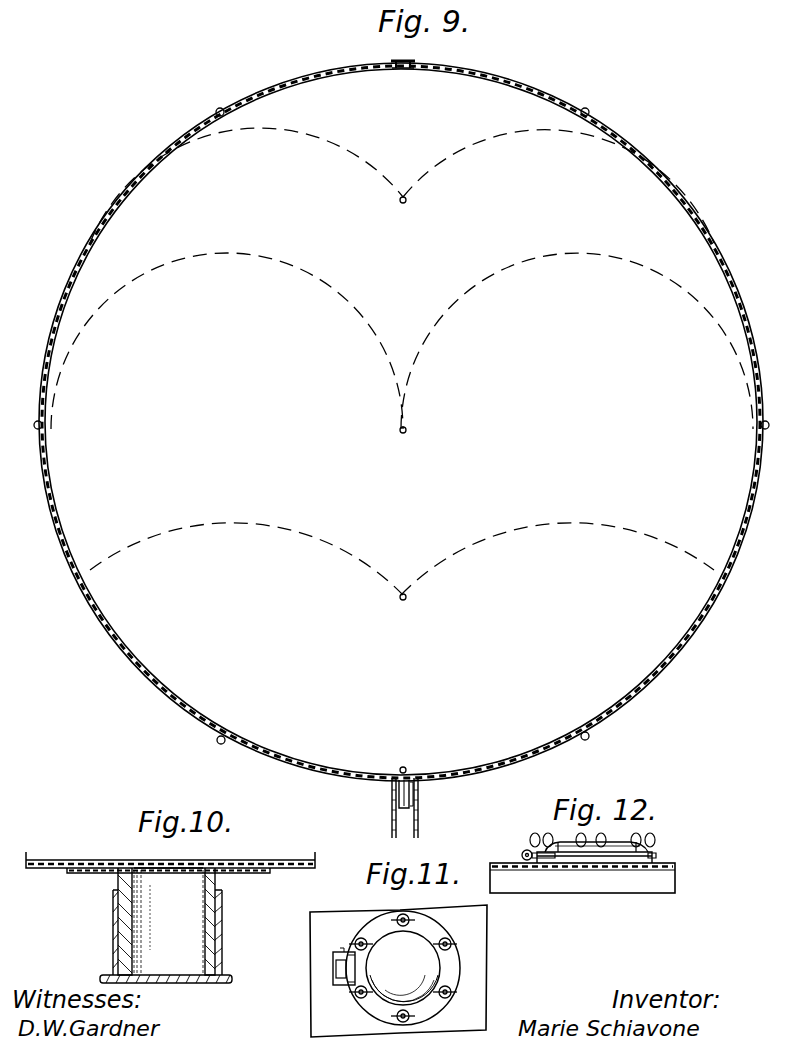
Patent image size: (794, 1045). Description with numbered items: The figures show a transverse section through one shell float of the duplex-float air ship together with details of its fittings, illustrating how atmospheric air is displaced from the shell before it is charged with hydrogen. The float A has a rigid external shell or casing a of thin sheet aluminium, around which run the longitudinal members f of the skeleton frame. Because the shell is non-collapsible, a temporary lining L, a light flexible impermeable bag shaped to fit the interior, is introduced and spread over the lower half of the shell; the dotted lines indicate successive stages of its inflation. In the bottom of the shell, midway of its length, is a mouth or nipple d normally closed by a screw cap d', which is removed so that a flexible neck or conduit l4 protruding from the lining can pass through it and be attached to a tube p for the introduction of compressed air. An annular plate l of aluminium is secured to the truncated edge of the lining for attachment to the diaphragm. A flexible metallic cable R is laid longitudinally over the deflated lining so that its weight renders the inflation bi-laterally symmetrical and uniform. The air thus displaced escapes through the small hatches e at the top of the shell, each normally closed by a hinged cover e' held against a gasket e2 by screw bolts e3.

In FIG. 9, the aerostat or float A is at (401, 422).
In FIG. 9, the temporary lining L is at (66, 481).
In FIG. 9, the longitudinal members f is at (223, 108).
In FIG. 9, the flexible metallic cable R is at (407, 200).
In FIG. 9, the hatch e is at (403, 85).
In FIG. 11, the hatch e is at (398, 971).
In FIG. 12, the hatch e is at (594, 864).
In FIG. 9, the hinged cover e' is at (414, 52).
In FIG. 11, the hinged cover e' is at (403, 968).
In FIG. 12, the hinged cover e' is at (597, 834).
In FIG. 12, the gasket e2 is at (658, 856).
In FIG. 11, the screw bolt e3 is at (456, 927).
In FIG. 12, the screw bolt e3 is at (592, 830).
In FIG. 9, the annular plate l is at (418, 783).
In FIG. 9, the flexible neck or conduit l4 is at (400, 805).
In FIG. 9, the mouth or nipple d is at (424, 796).
In FIG. 10, the mouth or nipple d is at (183, 921).
In FIG. 10, the screw cap d' is at (173, 936).
In FIG. 9, the tube p is at (414, 808).
In FIG. 12, the external shell or casing a is at (593, 879).